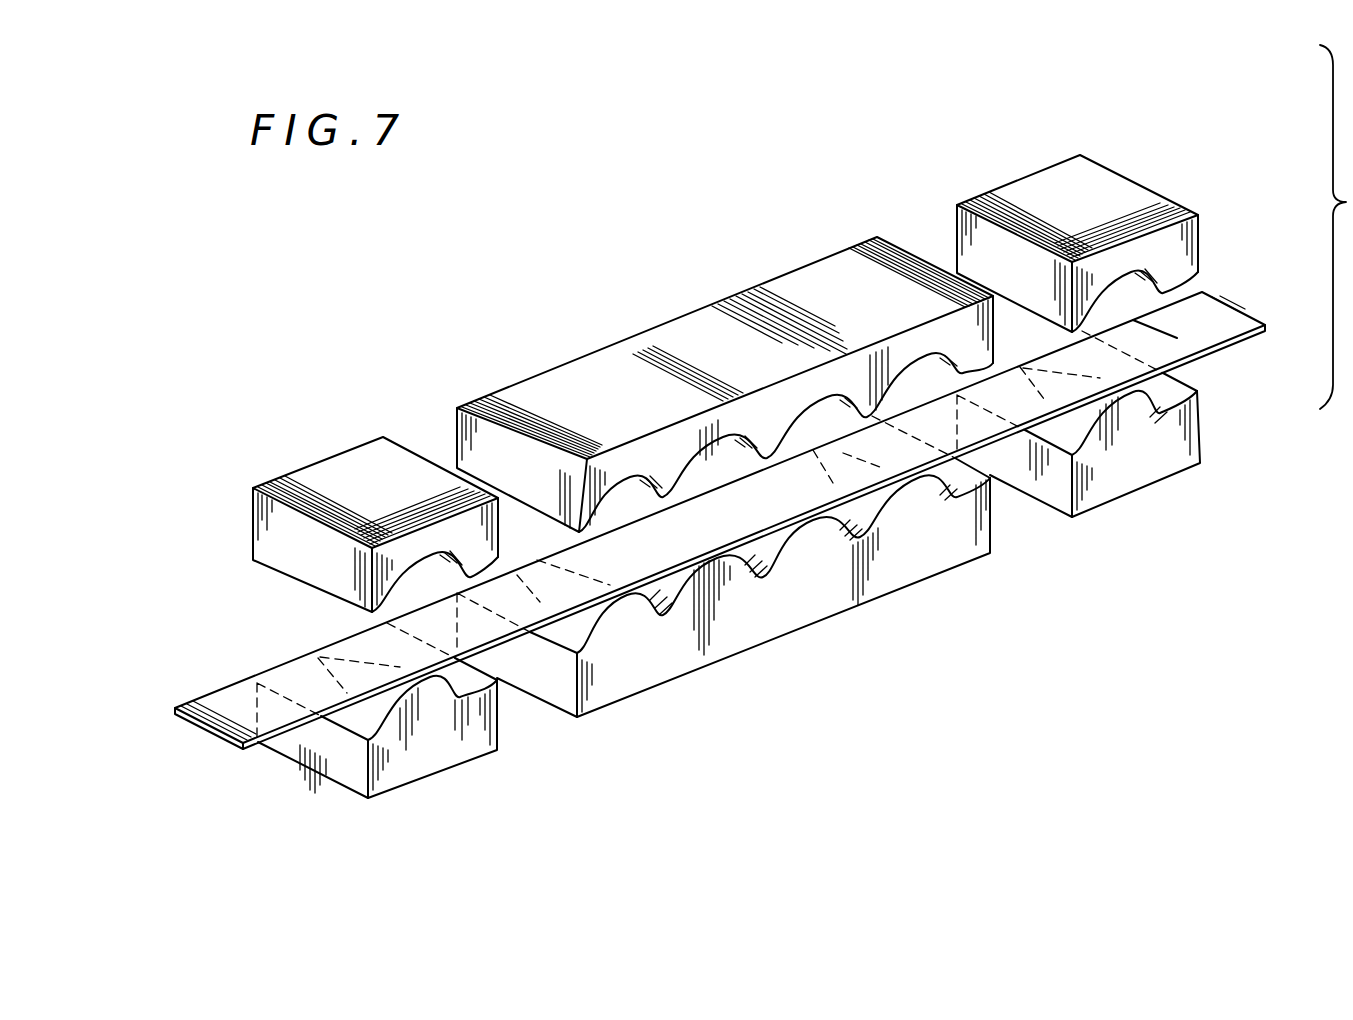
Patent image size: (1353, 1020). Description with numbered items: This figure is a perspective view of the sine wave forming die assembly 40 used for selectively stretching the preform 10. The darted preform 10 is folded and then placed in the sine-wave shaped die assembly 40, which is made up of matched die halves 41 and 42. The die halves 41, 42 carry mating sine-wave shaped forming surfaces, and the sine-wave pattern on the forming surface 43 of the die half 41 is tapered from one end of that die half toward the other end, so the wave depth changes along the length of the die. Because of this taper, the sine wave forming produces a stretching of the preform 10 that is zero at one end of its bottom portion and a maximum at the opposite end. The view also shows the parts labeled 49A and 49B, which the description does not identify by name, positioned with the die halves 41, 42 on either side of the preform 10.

The darted preform 10 is at (205, 733).
The sine-wave shaped die assembly 40 is at (680, 318).
The die half 41 is at (710, 664).
The die half 42 is at (398, 588).
The sine-wave shaped forming surface 43 is at (818, 519).
The first upper die block 49A is at (338, 455).
The second upper die block 49B is at (1033, 173).